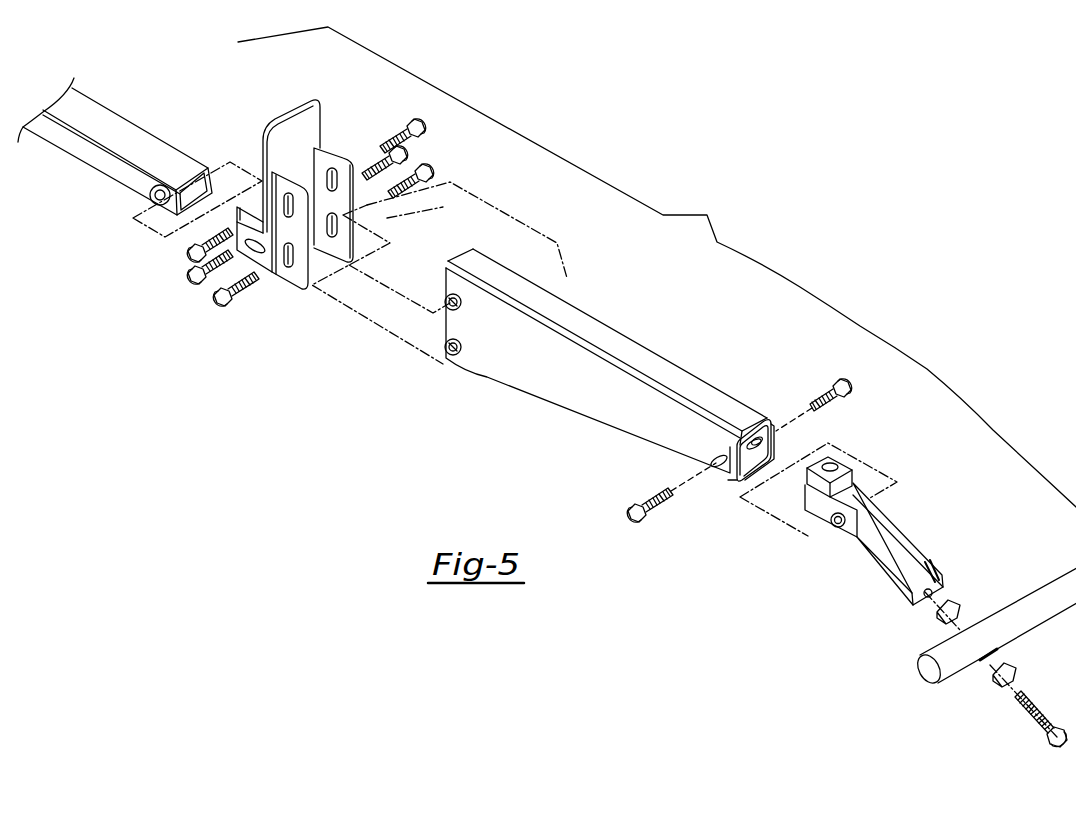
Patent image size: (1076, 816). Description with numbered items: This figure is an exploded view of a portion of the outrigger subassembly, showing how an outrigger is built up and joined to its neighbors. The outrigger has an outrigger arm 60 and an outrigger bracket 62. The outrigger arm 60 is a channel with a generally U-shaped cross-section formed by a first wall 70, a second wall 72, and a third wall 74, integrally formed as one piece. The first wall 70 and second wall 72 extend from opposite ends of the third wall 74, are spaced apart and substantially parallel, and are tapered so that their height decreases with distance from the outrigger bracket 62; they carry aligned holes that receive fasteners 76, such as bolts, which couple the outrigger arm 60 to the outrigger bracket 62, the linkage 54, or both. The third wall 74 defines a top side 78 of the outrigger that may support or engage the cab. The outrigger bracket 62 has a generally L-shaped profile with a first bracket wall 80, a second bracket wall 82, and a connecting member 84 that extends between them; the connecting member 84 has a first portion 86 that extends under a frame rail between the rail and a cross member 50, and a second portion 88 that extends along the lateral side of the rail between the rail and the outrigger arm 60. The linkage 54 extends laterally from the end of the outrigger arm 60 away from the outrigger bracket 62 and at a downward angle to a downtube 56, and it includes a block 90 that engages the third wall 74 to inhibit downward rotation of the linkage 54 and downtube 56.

The cross member 50 is at (92, 118).
The linkage 54 is at (900, 522).
The downtube 56 is at (1018, 600).
The outrigger arm 60 is at (633, 364).
The outrigger bracket 62 is at (275, 139).
The first wall 70 is at (562, 392).
The second wall 72 is at (776, 447).
The third wall 74 is at (752, 430).
The fasteners 76 is at (432, 172).
The top side 78 is at (587, 311).
The first bracket wall 80 is at (293, 279).
The second bracket wall 82 is at (337, 150).
The connecting member 84 is at (283, 116).
The first portion 86 is at (257, 203).
The second portion 88 is at (252, 212).
The block 90 is at (853, 473).